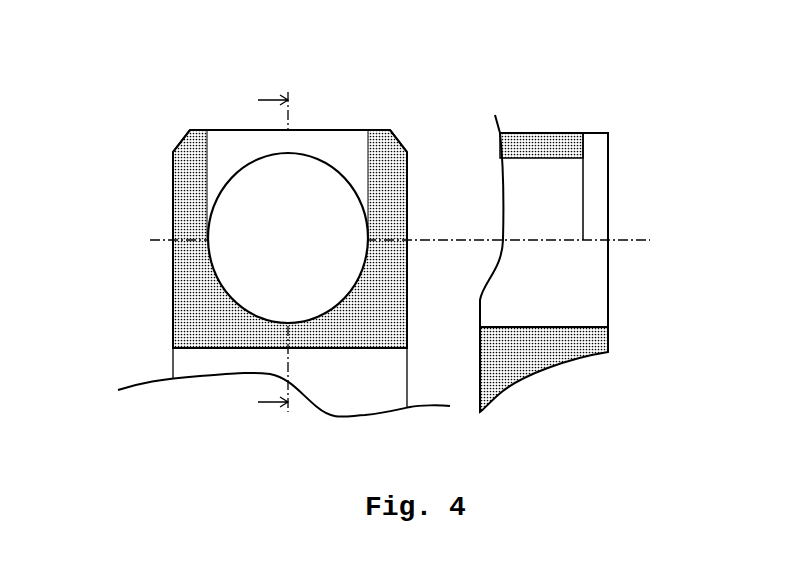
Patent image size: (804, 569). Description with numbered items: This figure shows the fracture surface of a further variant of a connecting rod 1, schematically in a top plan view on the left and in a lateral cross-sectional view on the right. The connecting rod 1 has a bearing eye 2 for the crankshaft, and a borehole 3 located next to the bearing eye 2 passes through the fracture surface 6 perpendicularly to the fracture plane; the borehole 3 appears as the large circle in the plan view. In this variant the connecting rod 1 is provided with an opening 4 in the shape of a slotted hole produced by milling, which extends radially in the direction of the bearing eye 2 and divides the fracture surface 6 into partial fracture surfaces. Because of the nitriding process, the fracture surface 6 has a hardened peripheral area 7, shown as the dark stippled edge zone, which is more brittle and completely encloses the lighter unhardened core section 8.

The connecting rod 1 is at (311, 97).
The bearing eye 2 is at (195, 357).
The borehole 3 is at (240, 216).
The opening 4 is at (348, 155).
The fracture surface 6 is at (173, 310).
The hardened peripheral area 7 is at (172, 155).
The unhardened core section 8 is at (388, 130).